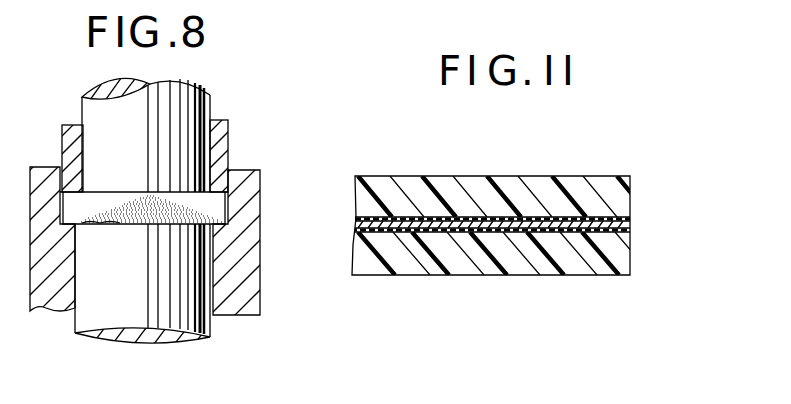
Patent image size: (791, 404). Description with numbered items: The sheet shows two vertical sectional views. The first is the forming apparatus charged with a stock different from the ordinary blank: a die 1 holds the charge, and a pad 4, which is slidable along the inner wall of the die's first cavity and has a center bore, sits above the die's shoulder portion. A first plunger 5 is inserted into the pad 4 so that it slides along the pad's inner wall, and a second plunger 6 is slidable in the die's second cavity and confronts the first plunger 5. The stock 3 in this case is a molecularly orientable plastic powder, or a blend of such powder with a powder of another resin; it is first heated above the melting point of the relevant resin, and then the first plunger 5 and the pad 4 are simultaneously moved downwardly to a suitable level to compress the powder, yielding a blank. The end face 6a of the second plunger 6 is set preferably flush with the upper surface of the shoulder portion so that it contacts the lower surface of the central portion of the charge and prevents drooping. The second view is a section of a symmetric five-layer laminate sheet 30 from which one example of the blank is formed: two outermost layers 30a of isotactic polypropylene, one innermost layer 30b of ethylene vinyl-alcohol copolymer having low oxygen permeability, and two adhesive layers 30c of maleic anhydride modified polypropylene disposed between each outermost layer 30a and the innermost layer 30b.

In FIG. 8, the die 1 is at (255, 249).
In FIG. 8, the pad 4 is at (228, 150).
In FIG. 8, the first plunger 5 is at (211, 107).
In FIG. 8, the stock 3 is at (210, 197).
In FIG. 8, the second plunger 6 is at (210, 339).
In FIG. 8, the end face 6a is at (124, 223).
In FIG. 11, the symmetric five-layer laminate sheet 30 is at (593, 174).
In FIG. 11, the outermost layer 30a is at (632, 179).
In FIG. 11, the innermost layer 30b is at (630, 226).
In FIG. 11, the adhesive layer 30c is at (632, 217).